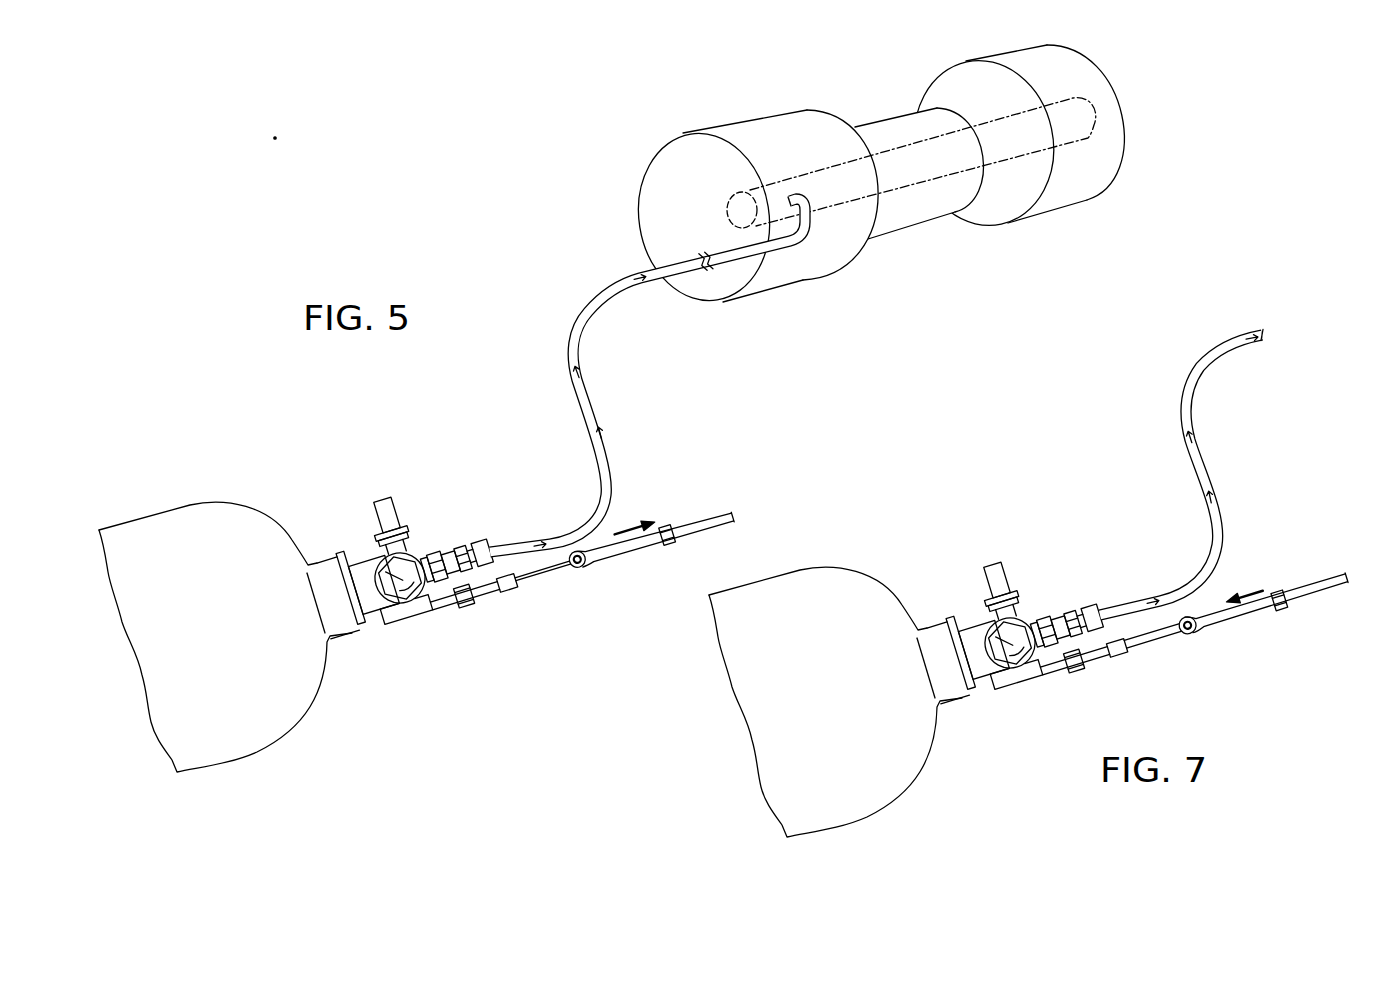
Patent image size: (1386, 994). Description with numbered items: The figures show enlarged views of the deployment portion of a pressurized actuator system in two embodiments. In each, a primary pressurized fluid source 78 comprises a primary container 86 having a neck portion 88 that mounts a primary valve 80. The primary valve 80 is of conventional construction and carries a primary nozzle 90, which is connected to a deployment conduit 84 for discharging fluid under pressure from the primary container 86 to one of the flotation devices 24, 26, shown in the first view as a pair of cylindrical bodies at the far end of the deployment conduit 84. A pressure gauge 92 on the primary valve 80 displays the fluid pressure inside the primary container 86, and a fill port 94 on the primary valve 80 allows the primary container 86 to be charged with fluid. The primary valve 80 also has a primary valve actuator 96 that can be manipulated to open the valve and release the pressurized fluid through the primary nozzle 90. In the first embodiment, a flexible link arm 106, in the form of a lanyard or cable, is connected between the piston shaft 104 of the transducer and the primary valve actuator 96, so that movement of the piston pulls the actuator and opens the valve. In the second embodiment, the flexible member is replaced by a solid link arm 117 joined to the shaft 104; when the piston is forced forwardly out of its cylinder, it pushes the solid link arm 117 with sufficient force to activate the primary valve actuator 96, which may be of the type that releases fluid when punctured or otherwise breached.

In FIG. 5, the flotation device 24 is at (876, 177).
In FIG. 5, the flotation device 26 is at (735, 120).
In FIG. 5, the primary pressurized fluid source 78 is at (193, 504).
In FIG. 7, the primary pressurized fluid source 78 is at (803, 569).
In FIG. 5, the primary valve 80 is at (432, 552).
In FIG. 7, the primary valve 80 is at (1042, 617).
In FIG. 5, the deployment conduit 84 is at (583, 310).
In FIG. 7, the deployment conduit 84 is at (1190, 385).
In FIG. 5, the primary container 86 is at (253, 725).
In FIG. 7, the primary container 86 is at (863, 790).
In FIG. 5, the neck portion 88 is at (317, 562).
In FIG. 7, the neck portion 88 is at (927, 627).
In FIG. 5, the primary nozzle 90 is at (459, 547).
In FIG. 7, the primary nozzle 90 is at (1069, 612).
In FIG. 5, the pressure gauge 92 is at (409, 605).
In FIG. 7, the pressure gauge 92 is at (1019, 670).
In FIG. 5, the fill port 94 is at (385, 498).
In FIG. 7, the fill port 94 is at (995, 563).
In FIG. 5, the primary valve actuator 96 is at (495, 600).
In FIG. 7, the primary valve actuator 96 is at (1100, 660).
In FIG. 5, the shaft 104 is at (733, 513).
In FIG. 7, the shaft 104 is at (1337, 578).
In FIG. 5, the link arm 106 is at (550, 572).
In FIG. 7, the solid link arm 117 is at (1158, 633).